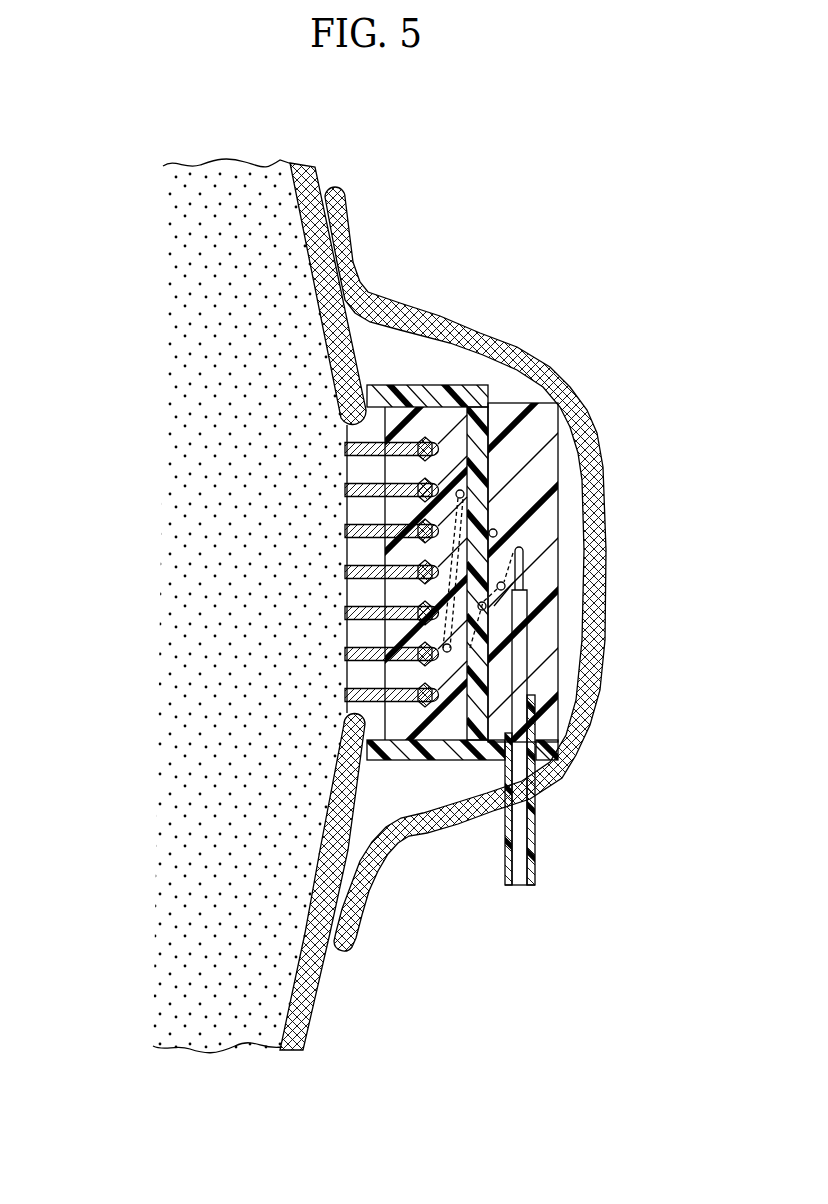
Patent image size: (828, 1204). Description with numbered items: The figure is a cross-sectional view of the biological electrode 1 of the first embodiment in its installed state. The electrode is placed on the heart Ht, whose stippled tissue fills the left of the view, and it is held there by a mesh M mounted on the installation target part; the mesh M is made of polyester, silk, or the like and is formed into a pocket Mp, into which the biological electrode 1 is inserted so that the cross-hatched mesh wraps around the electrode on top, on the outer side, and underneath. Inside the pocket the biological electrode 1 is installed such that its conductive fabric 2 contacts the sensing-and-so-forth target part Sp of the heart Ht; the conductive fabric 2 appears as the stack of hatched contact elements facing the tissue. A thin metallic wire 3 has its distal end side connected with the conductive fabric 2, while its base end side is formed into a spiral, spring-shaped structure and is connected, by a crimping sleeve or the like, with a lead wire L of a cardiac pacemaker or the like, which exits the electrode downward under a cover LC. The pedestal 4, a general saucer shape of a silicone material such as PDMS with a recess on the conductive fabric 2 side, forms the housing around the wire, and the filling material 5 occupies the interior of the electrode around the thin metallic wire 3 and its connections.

The biological electrode 1 is at (500, 386).
The conductive fabric 2 is at (367, 525).
The thin metallic wire 3 is at (524, 552).
The pedestal 4 is at (395, 752).
The filling material 5 is at (447, 430).
The lead wire L is at (531, 710).
The cover LC is at (536, 846).
The mesh M is at (346, 322).
The pocket Mp is at (561, 386).
The heart Ht is at (200, 290).
The sensing-and-so-forth target part Sp is at (333, 617).